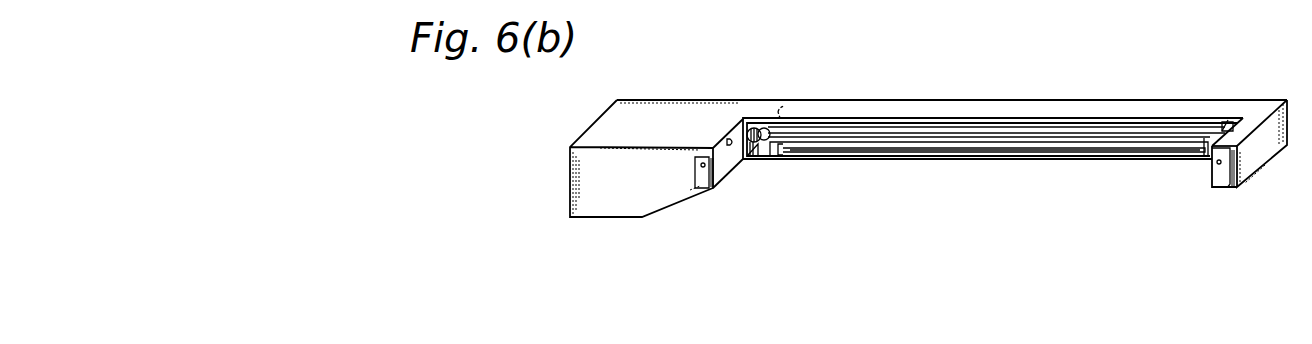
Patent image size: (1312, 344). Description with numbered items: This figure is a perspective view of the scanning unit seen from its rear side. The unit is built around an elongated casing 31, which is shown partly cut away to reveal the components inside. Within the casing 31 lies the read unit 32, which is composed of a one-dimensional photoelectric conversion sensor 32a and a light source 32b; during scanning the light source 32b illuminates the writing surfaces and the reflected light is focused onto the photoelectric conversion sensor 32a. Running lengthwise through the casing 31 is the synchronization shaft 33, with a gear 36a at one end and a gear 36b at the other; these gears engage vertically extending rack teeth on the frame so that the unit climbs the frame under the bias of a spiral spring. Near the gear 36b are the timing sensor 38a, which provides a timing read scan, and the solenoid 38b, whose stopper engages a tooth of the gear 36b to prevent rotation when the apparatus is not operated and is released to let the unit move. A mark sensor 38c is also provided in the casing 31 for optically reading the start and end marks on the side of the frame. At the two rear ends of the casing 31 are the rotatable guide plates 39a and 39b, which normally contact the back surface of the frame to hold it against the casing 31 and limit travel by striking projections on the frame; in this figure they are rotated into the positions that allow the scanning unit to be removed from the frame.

The casing 31 is at (1062, 106).
The read unit 32 is at (773, 157).
The one-dimensional photoelectric conversion sensor 32a is at (816, 149).
The light source 32b is at (856, 149).
The synchronization shaft 33 is at (933, 133).
The gear 36a is at (1227, 120).
The gear 36b is at (757, 126).
The timing sensor 38a is at (786, 107).
The solenoid 38b is at (751, 158).
The mark sensor 38c is at (727, 141).
The rotatable guide plate 39a is at (1222, 186).
The rotatable guide plate 39b is at (703, 188).